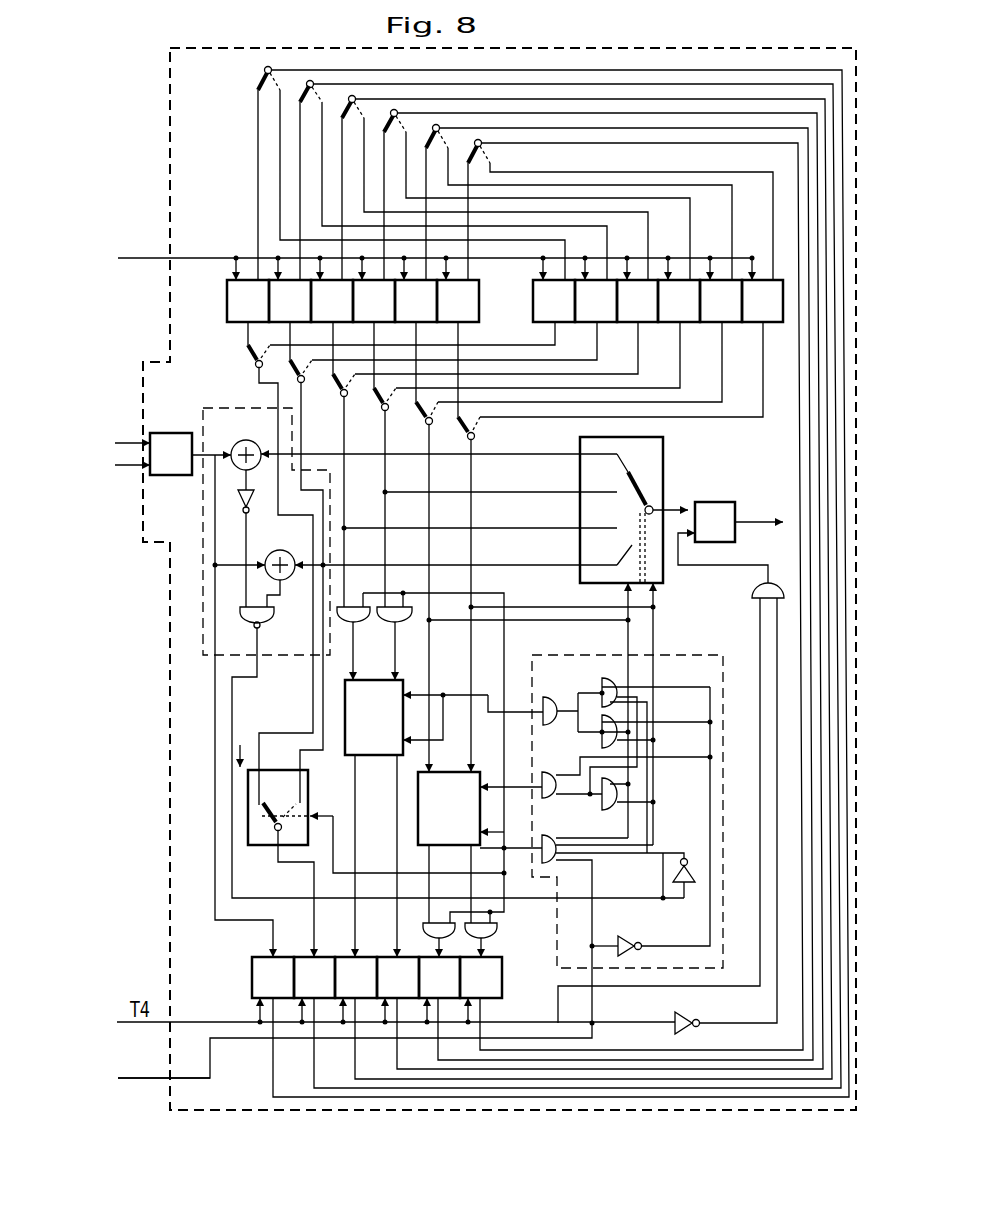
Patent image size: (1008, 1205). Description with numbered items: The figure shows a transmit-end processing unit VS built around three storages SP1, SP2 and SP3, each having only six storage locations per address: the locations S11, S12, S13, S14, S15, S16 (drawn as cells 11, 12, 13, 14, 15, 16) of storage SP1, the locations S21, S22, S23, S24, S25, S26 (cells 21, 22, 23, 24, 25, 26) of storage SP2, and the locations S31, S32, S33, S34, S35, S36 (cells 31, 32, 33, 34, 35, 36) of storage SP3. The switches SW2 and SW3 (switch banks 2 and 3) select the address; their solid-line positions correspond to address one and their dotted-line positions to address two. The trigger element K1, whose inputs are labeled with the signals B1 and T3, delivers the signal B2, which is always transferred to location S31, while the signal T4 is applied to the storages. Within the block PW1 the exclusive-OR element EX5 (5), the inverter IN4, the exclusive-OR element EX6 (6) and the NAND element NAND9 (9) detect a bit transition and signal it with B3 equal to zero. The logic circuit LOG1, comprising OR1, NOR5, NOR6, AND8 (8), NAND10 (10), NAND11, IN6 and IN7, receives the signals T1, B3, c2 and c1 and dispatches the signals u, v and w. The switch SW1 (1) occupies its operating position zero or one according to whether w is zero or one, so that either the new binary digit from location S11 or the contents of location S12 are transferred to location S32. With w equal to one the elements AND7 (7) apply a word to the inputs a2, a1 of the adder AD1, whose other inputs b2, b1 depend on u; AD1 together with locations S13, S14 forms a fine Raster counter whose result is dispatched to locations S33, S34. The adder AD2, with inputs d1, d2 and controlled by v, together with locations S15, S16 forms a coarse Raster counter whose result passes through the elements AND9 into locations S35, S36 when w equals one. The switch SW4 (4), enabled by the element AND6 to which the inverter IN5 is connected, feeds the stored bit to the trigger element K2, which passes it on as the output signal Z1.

The switch SW1 1 is at (303, 807).
The switch SW2 2 is at (343, 115).
The switch SW3 3 is at (386, 395).
The switch SW4 4 is at (656, 510).
The exclusive-OR element EX5 5 is at (251, 445).
The exclusive-OR element EX6 6 is at (287, 555).
The AND elements AND7 7 is at (374, 630).
The AND element AND8 8 is at (560, 805).
The NAND element NAND9 9 is at (273, 662).
The NAND element NAND10 10 is at (654, 793).
The storage location S11 11 is at (248, 301).
The storage location S12 12 is at (290, 301).
The storage location S13 13 is at (332, 301).
The storage location S14 14 is at (374, 301).
The storage location S15 15 is at (416, 301).
The storage location S16 16 is at (458, 301).
The storage location S21 21 is at (554, 301).
The storage location S22 22 is at (596, 301).
The storage location S23 23 is at (637, 301).
The storage location S24 24 is at (679, 301).
The storage location S25 25 is at (721, 301).
The storage location S26 26 is at (762, 301).
The storage location S31 31 is at (273, 977).
The storage location S32 32 is at (314, 977).
The storage location S33 33 is at (356, 977).
The storage location S34 34 is at (398, 977).
The storage location S35 35 is at (439, 977).
The storage location S36 36 is at (481, 977).
The processing unit VS is at (656, 48).
The switch SW2 is at (343, 115).
The clock signal T4 is at (436, 255).
The storage SP1 is at (225, 317).
The storage location S11 is at (248, 301).
The storage location S12 is at (290, 301).
The storage location S13 is at (332, 301).
The storage location S14 is at (374, 301).
The storage location S15 is at (416, 301).
The storage location S16 is at (458, 301).
The storage SP2 is at (529, 317).
The storage location S21 is at (554, 301).
The storage location S22 is at (596, 301).
The storage location S23 is at (637, 301).
The storage location S24 is at (679, 301).
The storage location S25 is at (721, 301).
The storage location S26 is at (762, 301).
The switch SW3 is at (386, 395).
The trigger element K1 is at (171, 454).
The input signal B1 is at (131, 429).
The clock signal T3 is at (131, 481).
The signal B2 is at (211, 441).
The pulse evaluation unit PW1 is at (271, 416).
The exclusive-OR element EX5 is at (251, 445).
The inverter IN4 is at (238, 499).
The exclusive-OR element EX6 is at (287, 555).
The NAND element NAND9 is at (272, 618).
The signal B3 is at (246, 742).
The switch SW1 is at (308, 790).
The AND elements AND7 is at (374, 630).
The adder AD1 is at (374, 717).
The adder AD2 is at (449, 808).
The adder input a1 is at (380, 667).
The adder input a2 is at (339, 667).
The adder input b1 is at (423, 717).
The adder input b2 is at (445, 682).
The signal c1 is at (458, 757).
The signal c2 is at (416, 757).
The adder input d1 is at (511, 774).
The adder input d2 is at (492, 822).
The signal u is at (515, 709).
The signal v is at (519, 784).
The signal w is at (511, 842).
The AND elements AND9 is at (487, 938).
The switch SW4 is at (665, 457).
The trigger element K2 is at (715, 522).
The output signal Z1 is at (759, 508).
The AND element AND6 is at (741, 589).
The logic circuit LOG1 is at (680, 653).
The OR element OR1 is at (564, 697).
The NOR element NOR5 is at (605, 677).
The NOR element NOR6 is at (602, 742).
The NAND element NAND10 is at (618, 783).
The AND element AND8 is at (560, 805).
The NAND element NAND11 is at (555, 860).
The inverter IN7 is at (636, 932).
The inverter IN6 is at (690, 887).
The inverter IN5 is at (688, 1011).
The storage SP3 is at (240, 989).
The storage location S31 is at (273, 977).
The storage location S32 is at (314, 977).
The storage location S33 is at (356, 977).
The storage location S34 is at (398, 977).
The storage location S35 is at (439, 977).
The storage location S36 is at (481, 977).
The signal T1 is at (164, 1065).